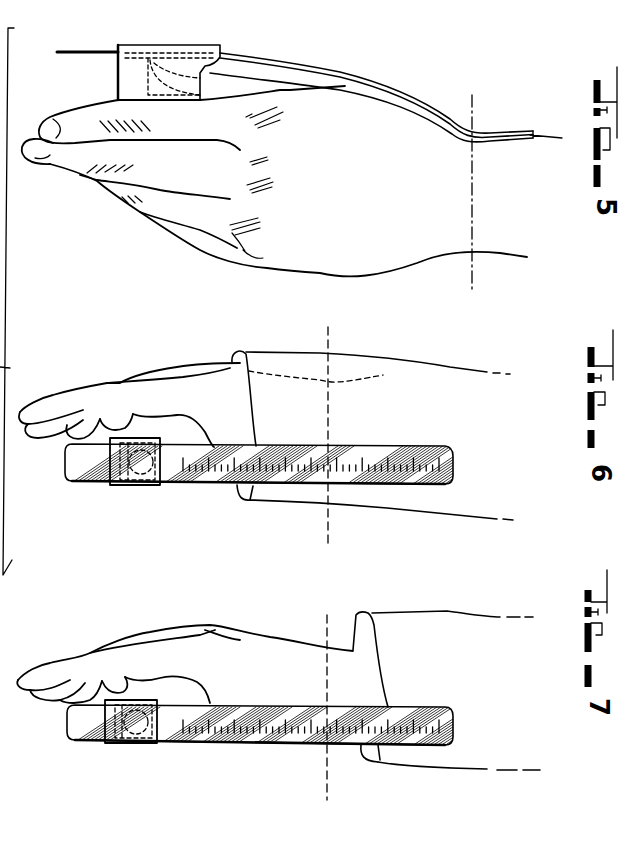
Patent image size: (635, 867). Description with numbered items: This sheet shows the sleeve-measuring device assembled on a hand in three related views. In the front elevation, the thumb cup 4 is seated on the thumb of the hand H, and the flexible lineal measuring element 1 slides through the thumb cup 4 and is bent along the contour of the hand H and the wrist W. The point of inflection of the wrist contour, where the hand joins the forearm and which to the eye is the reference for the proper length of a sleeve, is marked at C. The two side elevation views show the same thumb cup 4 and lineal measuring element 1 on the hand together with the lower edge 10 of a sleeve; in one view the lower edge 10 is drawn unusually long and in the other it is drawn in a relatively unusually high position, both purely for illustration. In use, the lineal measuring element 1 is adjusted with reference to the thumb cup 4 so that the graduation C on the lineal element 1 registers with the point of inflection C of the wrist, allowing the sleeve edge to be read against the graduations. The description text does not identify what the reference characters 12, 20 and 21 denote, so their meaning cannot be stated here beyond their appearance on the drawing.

In FIG. 5, the lineal measuring element 1 is at (393, 87).
In FIG. 6, the lineal measuring element 1 is at (76, 484).
In FIG. 7, the lineal measuring element 1 is at (77, 731).
In FIG. 5, the thumb cup 4 is at (182, 51).
In FIG. 6, the thumb cup 4 is at (137, 483).
In FIG. 7, the thumb cup 4 is at (137, 743).
In FIG. 6, the lower edge of sleeve 10 is at (247, 377).
In FIG. 7, the lower edge of sleeve 10 is at (370, 618).
In FIG. 6, the table edge 12 is at (10, 368).
In FIG. 7, the support edge 20 is at (6, 572).
In FIG. 7, the support edge 21 is at (14, 717).
In FIG. 5, the hand H is at (373, 260).
In FIG. 5, the wrist W is at (482, 257).
In FIG. 5, the point of inflection of the wrist contour C is at (481, 192).
In FIG. 6, the point of inflection of the wrist contour C is at (338, 436).
In FIG. 7, the point of inflection of the wrist contour C is at (337, 707).